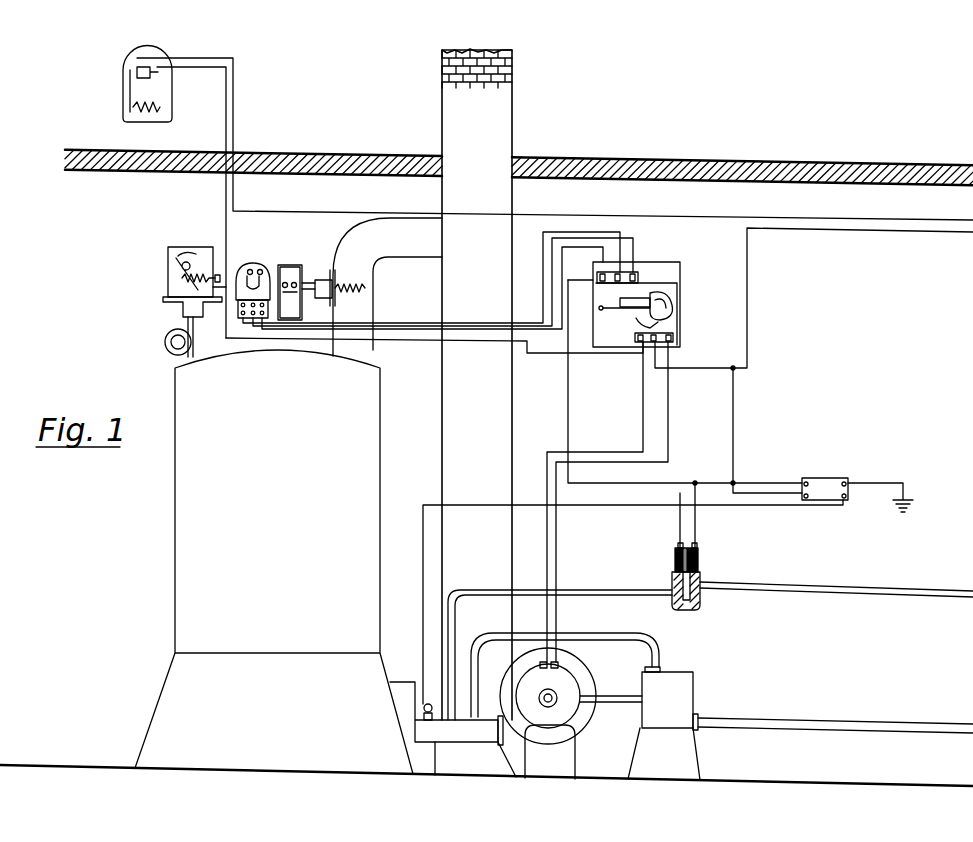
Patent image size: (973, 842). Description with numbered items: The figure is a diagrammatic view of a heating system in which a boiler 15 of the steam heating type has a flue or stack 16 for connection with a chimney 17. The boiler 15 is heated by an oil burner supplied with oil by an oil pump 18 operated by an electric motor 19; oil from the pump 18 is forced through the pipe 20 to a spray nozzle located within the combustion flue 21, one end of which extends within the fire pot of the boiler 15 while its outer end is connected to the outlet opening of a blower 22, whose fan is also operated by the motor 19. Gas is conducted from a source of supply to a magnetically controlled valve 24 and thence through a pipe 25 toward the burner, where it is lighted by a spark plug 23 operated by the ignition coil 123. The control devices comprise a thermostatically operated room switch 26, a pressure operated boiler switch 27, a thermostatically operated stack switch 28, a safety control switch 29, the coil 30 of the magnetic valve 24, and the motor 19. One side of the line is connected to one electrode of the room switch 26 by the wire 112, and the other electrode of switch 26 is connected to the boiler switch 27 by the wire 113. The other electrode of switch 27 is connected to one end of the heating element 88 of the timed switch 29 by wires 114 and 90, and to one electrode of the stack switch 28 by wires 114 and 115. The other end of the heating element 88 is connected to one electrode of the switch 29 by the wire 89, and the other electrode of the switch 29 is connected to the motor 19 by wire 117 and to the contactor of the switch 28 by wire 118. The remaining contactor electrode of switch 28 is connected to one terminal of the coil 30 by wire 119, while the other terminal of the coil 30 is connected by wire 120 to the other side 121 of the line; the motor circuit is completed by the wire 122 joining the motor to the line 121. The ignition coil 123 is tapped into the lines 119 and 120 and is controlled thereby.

The boiler 15 is at (186, 523).
The flue or stack 16 is at (340, 246).
The chimney 17 is at (514, 108).
The oil pump 18 is at (693, 687).
The electric motor 19 is at (568, 712).
The pipe 20 is at (614, 638).
The combustion flue 21 is at (462, 744).
The blower 22 is at (602, 666).
The spark plug 23 is at (421, 706).
The magnetically controlled valve 24 is at (702, 576).
The pipe 25 is at (580, 588).
The thermostatically operated room switch 26 is at (124, 92).
The pressure operated boiler switch 27 is at (161, 276).
The thermostatically operated stack switch 28 is at (288, 258).
The safety control switch 29 is at (689, 299).
The coil 30 is at (674, 562).
The heating element 88 is at (640, 315).
The wire 89 is at (673, 318).
The wire 90 is at (637, 330).
The wire 112 is at (236, 72).
The wire 113 is at (224, 218).
The wire 114 is at (407, 342).
The wire 115 is at (402, 320).
The wire 117 is at (670, 410).
The wire 118 is at (463, 324).
The wire 119 is at (468, 342).
The wire 120 is at (736, 414).
The other side of the line 121 is at (767, 232).
The wire 122 is at (644, 412).
The ignition coil 123 is at (858, 470).